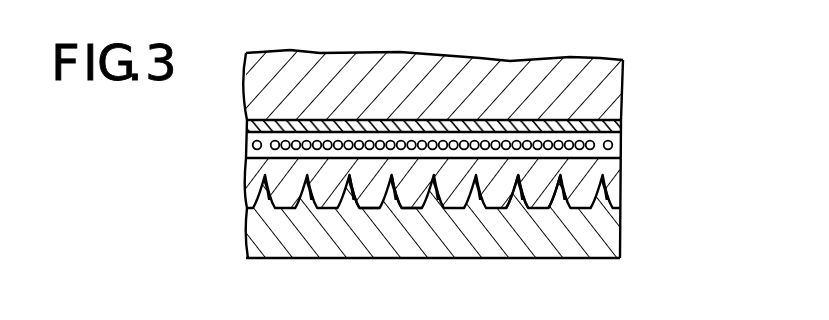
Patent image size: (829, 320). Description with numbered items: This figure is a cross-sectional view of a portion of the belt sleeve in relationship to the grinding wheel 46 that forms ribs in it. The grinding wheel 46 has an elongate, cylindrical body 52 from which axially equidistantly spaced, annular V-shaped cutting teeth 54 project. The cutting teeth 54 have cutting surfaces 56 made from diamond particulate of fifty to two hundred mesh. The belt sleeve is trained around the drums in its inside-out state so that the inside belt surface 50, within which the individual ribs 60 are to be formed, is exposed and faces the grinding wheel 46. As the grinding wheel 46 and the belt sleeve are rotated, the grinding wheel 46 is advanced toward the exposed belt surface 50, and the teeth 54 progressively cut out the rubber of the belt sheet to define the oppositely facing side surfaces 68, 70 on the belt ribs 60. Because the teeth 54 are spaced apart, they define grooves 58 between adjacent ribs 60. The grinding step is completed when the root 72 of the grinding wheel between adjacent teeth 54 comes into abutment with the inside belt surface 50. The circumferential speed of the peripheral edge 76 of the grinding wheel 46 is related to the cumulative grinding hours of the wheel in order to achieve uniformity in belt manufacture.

The grinding wheel 46 is at (590, 235).
The inside belt surface 50 is at (457, 212).
The elongate, cylindrical body 52 is at (410, 245).
The cutting teeth 54 is at (253, 200).
The cutting surfaces 56 is at (362, 189).
The grooves 58 is at (391, 225).
The ribs 60 is at (415, 182).
The side surface 68 is at (520, 200).
The side surface 70 is at (563, 240).
The root 72 is at (363, 203).
The peripheral edge 76 is at (517, 193).